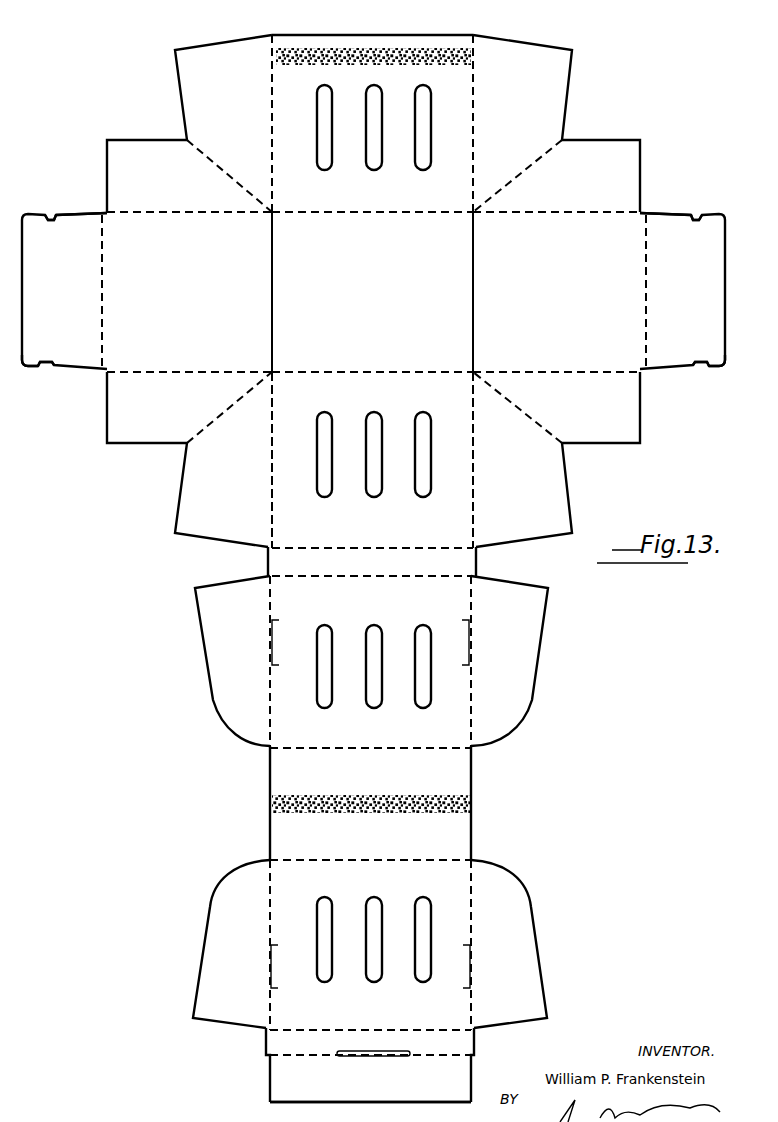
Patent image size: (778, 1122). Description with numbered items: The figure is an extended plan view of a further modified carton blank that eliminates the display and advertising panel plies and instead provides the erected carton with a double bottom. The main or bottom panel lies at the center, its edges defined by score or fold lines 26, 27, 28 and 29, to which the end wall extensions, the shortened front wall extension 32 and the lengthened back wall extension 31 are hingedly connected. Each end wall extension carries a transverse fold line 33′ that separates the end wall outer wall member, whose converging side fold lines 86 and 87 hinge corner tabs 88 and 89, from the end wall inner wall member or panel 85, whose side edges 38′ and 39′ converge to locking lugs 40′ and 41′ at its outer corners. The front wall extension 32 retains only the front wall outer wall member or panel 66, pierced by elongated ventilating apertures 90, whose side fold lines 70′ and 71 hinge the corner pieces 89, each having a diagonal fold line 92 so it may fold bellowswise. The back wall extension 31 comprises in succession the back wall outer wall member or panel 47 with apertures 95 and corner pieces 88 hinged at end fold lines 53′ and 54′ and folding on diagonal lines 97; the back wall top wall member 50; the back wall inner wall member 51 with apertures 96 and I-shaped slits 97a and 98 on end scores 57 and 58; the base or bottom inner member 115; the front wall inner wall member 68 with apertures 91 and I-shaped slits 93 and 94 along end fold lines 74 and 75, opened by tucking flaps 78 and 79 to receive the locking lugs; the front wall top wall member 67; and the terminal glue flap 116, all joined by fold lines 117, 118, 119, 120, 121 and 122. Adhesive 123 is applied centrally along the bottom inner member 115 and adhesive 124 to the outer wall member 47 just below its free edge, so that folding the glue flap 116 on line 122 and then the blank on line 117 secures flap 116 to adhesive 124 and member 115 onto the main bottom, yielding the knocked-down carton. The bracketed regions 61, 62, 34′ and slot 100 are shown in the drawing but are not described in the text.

The front wall extension 32 is at (651, 72).
The back wall extension 31 is at (646, 687).
The side score or fold line 70′ is at (273, 128).
The side score or fold line 71 is at (475, 149).
The front wall outer wall member or panel 66 is at (475, 108).
The adhesive 124 is at (284, 66).
The elongated apertures 90 is at (382, 168).
The corner pieces 89 is at (208, 52).
The diagonal score or fold line 92 is at (236, 152).
The score or fold line 29 is at (383, 213).
The score or fold line 87 is at (186, 200).
The side edge 38′ is at (78, 218).
The transverse score or fold line 33′ is at (103, 288).
The locking lug 40′ is at (40, 218).
The end wall inner wall member or panel 85 is at (62, 222).
The side edge 39′ is at (70, 362).
The locking lug 41′ is at (32, 370).
The score or fold line 28 is at (274, 282).
The score or fold line 26 is at (474, 288).
The fold lines 34′ is at (262, 246).
The score or fold line 27 is at (380, 374).
The back wall outer wall member or panel 47 is at (330, 366).
The score or fold line 86 is at (191, 366).
The end score or fold line 53′ is at (274, 460).
The end score or fold line 54′ is at (475, 458).
The elongated apertures 95 is at (326, 413).
The corner pieces 88 is at (138, 443).
The diagonal score or fold line 97 is at (210, 420).
The score or fold line 117 is at (317, 541).
The score or fold line 118 is at (345, 567).
The back wall top wall member or panel 50 is at (430, 535).
The end score 57 is at (272, 698).
The end score 58 is at (474, 606).
The elongated apertures 96 is at (364, 635).
The I-shaped slit 97a is at (273, 647).
The I-shaped slit 98 is at (471, 647).
The end flap 61 is at (222, 720).
The end flap 62 is at (517, 720).
The score or fold line 119 is at (333, 740).
The back wall inner wall member or panel 51 is at (430, 740).
The base or bottom inner member or panel 115 is at (466, 841).
The adhesive 123 is at (333, 790).
The score or fold line 120 is at (304, 861).
The front wall inner wall member or panel 68 is at (422, 850).
The end score or fold line 74 is at (271, 912).
The end score or fold line 75 is at (472, 893).
The elongated apertures 91 is at (415, 912).
The I-shaped slit 93 is at (272, 967).
The I-shaped slit 94 is at (472, 967).
The tucking flap 78 is at (212, 990).
The tucking flap 79 is at (532, 947).
The score or fold line 121 is at (362, 1020).
The front wall top wall member or panel 67 is at (446, 1038).
The score or fold line 122 is at (290, 1058).
The slot 100 is at (390, 1058).
The terminal glue flap or panel 116 is at (330, 1096).